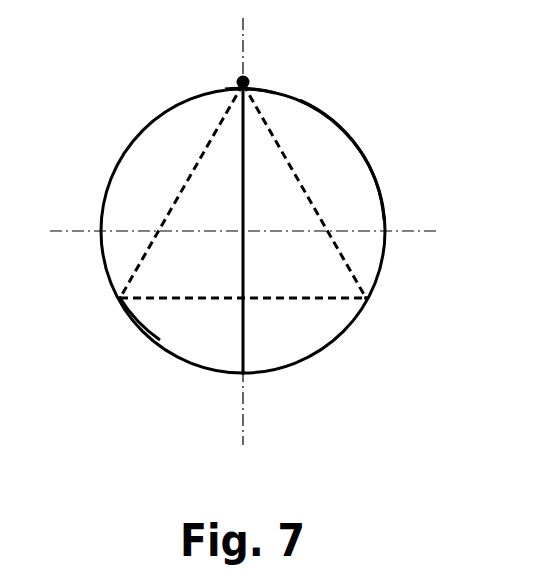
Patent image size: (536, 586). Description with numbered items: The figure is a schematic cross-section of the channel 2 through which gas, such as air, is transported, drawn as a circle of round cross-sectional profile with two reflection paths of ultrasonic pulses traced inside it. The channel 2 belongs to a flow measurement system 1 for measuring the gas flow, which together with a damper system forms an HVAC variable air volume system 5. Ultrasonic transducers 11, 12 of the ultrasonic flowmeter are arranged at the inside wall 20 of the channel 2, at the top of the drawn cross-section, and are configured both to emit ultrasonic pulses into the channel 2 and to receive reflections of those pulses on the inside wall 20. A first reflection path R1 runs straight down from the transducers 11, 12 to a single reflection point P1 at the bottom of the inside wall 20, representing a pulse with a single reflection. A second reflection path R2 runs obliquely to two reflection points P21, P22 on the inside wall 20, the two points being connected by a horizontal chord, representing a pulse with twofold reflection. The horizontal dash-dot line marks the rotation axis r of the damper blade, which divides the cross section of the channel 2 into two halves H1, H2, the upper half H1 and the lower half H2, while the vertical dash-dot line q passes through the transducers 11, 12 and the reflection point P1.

The flow measurement system 1 is at (84, 275).
The channel 2 is at (142, 332).
The variable air volume (VAV) system 5 is at (377, 105).
The ultrasonic transducer 11 is at (198, 72).
The ultrasonic transducer 12 is at (237, 80).
The inside wall 20 is at (264, 80).
The reflection path R1 is at (241, 260).
The reflection path R2 is at (183, 190).
The half of the cross section H1 is at (352, 182).
The half of the cross section H2 is at (295, 349).
The reflection point P1 is at (258, 385).
The reflection point P21 is at (98, 309).
The reflection point P22 is at (388, 309).
The axis q is at (243, 222).
The rotation axis r is at (254, 233).